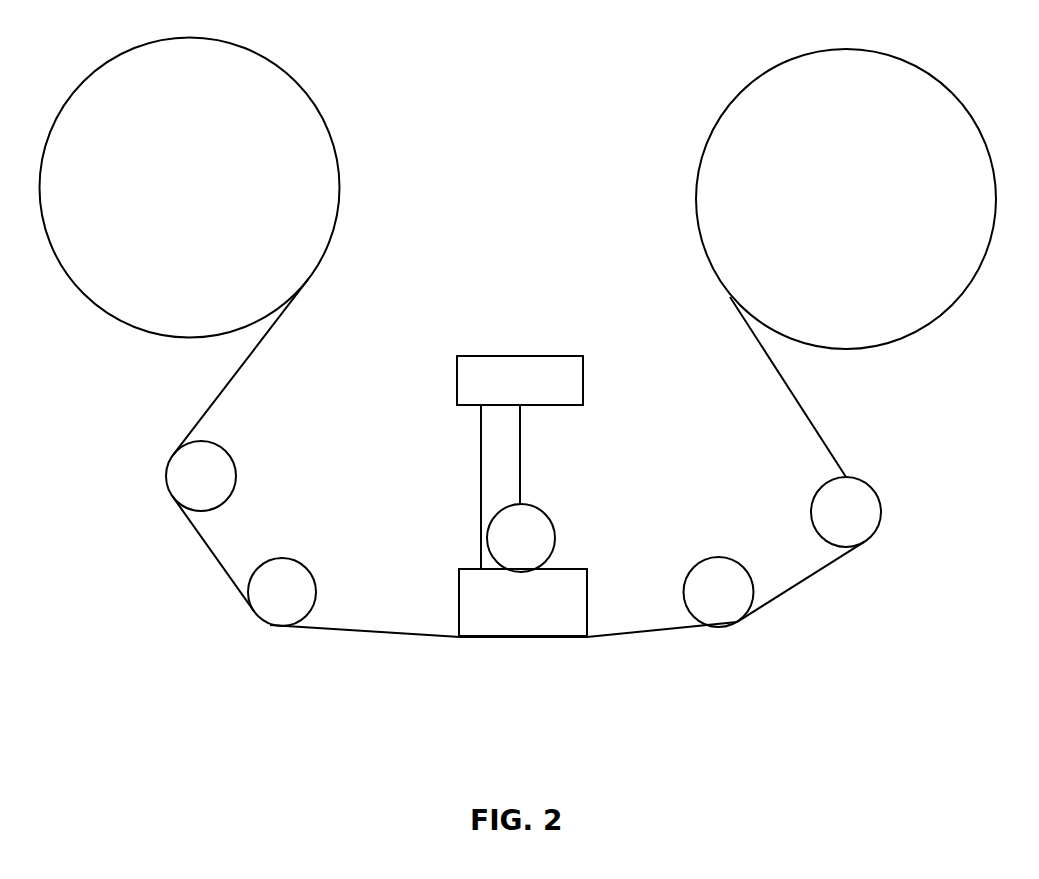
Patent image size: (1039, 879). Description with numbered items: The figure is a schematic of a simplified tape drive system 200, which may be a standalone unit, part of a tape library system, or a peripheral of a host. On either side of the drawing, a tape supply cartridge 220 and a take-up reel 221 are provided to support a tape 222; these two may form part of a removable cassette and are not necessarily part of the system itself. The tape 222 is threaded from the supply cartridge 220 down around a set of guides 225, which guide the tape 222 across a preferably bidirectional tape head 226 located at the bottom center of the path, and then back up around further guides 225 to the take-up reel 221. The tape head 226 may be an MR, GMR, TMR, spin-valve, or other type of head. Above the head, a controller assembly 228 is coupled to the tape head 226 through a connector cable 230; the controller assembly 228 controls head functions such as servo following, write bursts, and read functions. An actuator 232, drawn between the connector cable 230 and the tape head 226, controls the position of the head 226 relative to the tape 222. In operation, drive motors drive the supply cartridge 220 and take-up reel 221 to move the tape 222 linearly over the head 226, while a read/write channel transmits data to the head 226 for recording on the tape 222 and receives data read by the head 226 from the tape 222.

The web handling system 200 is at (155, 407).
The tape supply cartridge 220 is at (337, 160).
The take-up reel 221 is at (938, 320).
The tape 222 is at (375, 635).
The guides 225 is at (281, 558).
The tape head 226 is at (587, 603).
The controller assembly 228 is at (520, 357).
The connector cable 230 is at (480, 533).
The actuator 232 is at (546, 512).